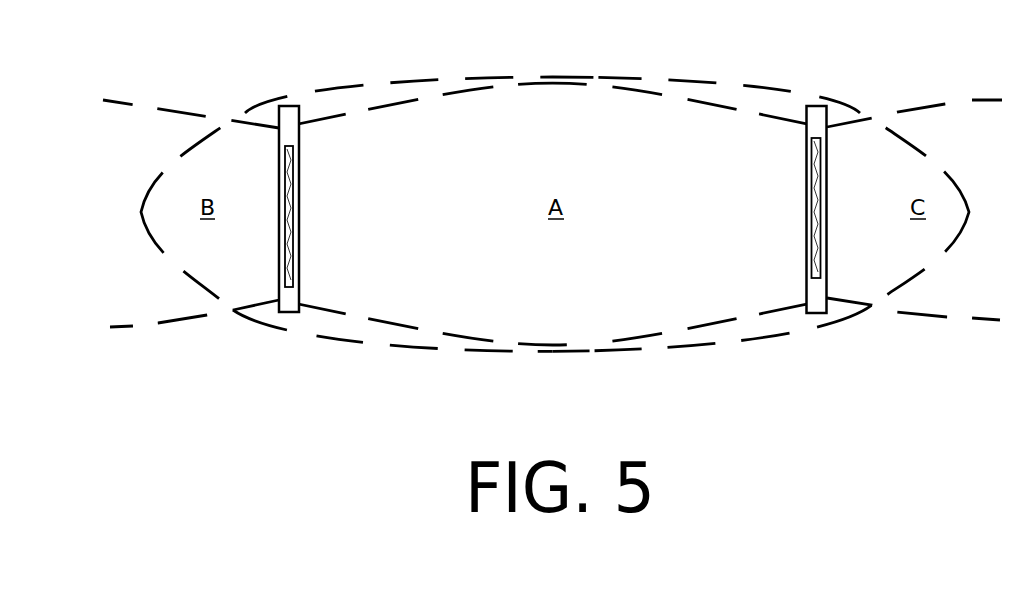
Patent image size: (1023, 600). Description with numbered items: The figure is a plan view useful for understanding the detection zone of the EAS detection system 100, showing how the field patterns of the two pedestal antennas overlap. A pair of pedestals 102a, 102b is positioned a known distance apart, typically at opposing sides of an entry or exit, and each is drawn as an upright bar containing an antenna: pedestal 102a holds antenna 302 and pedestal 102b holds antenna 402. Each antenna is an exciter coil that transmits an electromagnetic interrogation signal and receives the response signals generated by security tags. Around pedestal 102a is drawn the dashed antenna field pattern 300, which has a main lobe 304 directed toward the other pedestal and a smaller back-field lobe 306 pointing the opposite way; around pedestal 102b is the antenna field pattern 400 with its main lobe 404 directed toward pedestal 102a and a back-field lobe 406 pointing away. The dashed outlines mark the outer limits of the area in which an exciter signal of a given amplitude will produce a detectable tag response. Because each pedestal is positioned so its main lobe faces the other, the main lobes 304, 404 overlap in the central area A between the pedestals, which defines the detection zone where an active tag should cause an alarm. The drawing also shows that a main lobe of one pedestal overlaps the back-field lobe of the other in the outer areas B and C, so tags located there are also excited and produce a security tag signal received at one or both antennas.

The EAS detection system 100 is at (188, 57).
The pedestal 102a is at (300, 140).
The pedestal 102b is at (807, 150).
The antenna field pattern 300 is at (360, 284).
The antenna 302 is at (293, 206).
The main lobe 304 is at (793, 333).
The back-field lobe 306 is at (115, 102).
The antenna field pattern 400 is at (704, 298).
The antenna 402 is at (811, 208).
The main lobe 404 is at (313, 337).
The back-field lobe 406 is at (990, 102).